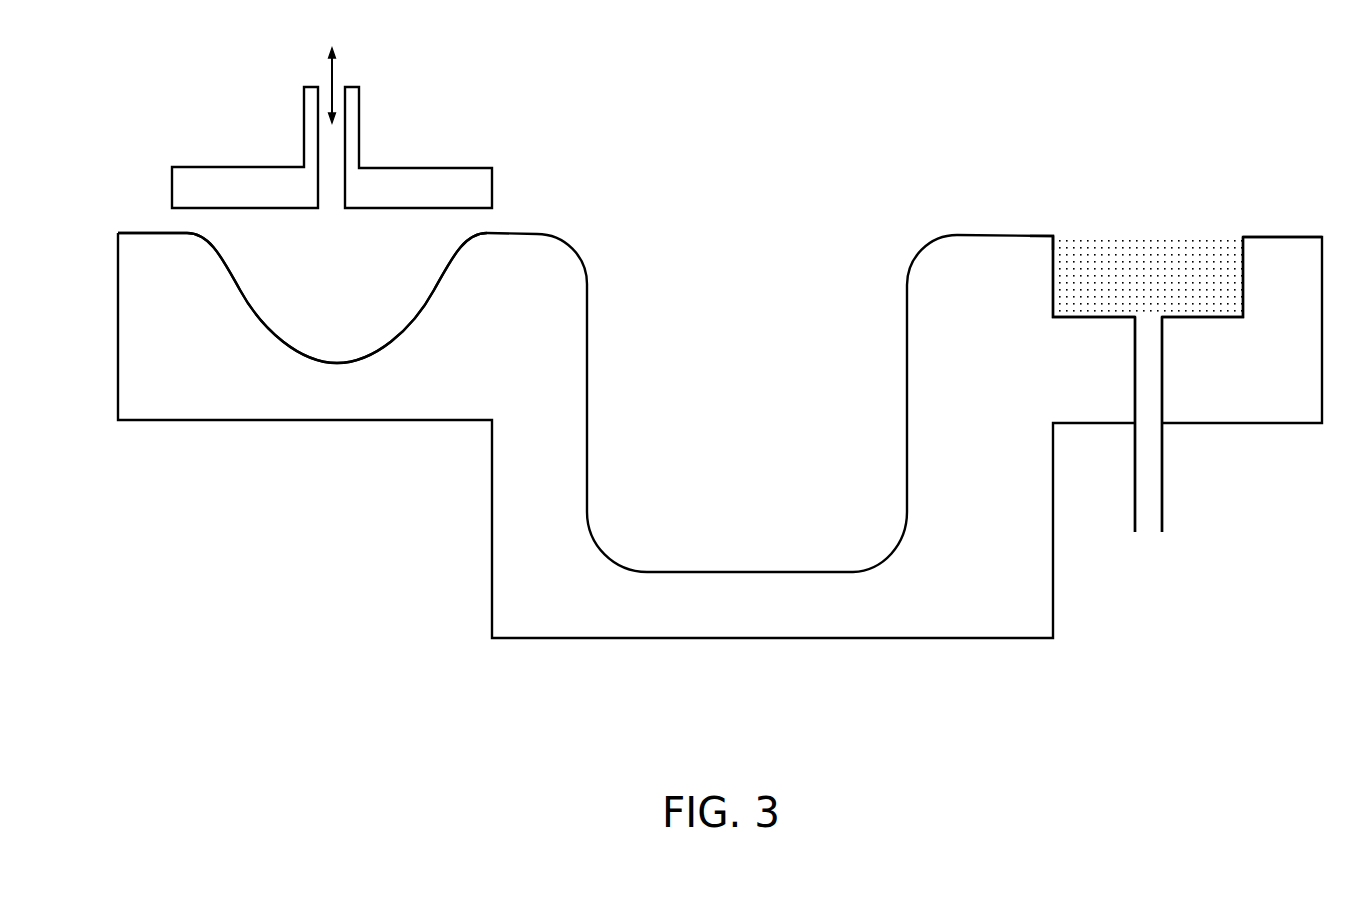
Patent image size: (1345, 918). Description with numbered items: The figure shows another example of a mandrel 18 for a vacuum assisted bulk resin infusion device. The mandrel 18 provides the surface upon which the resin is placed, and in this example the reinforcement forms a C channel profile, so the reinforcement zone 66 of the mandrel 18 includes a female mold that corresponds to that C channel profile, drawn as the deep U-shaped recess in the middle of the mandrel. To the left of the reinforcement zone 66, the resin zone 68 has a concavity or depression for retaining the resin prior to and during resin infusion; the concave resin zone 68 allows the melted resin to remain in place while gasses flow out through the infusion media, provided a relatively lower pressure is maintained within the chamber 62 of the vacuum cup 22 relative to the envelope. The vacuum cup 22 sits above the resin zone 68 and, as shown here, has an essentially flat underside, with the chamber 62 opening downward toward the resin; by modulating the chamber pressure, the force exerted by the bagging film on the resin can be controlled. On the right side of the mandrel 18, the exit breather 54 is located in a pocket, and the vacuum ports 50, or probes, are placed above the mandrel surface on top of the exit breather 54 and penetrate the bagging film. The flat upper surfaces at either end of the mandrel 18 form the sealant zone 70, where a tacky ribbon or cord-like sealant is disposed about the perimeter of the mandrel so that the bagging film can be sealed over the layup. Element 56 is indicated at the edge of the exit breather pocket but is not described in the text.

The mandrel 18 is at (1027, 237).
The vacuum cup 22 is at (359, 101).
The vacuum ports 50 is at (1135, 478).
The exit breather 54 is at (1052, 292).
The pocket edge 56 is at (1037, 243).
The chamber 62 is at (338, 233).
The reinforcement zone 66 is at (747, 243).
The resin zone 68 is at (337, 299).
The sealant zone 70 is at (158, 236).